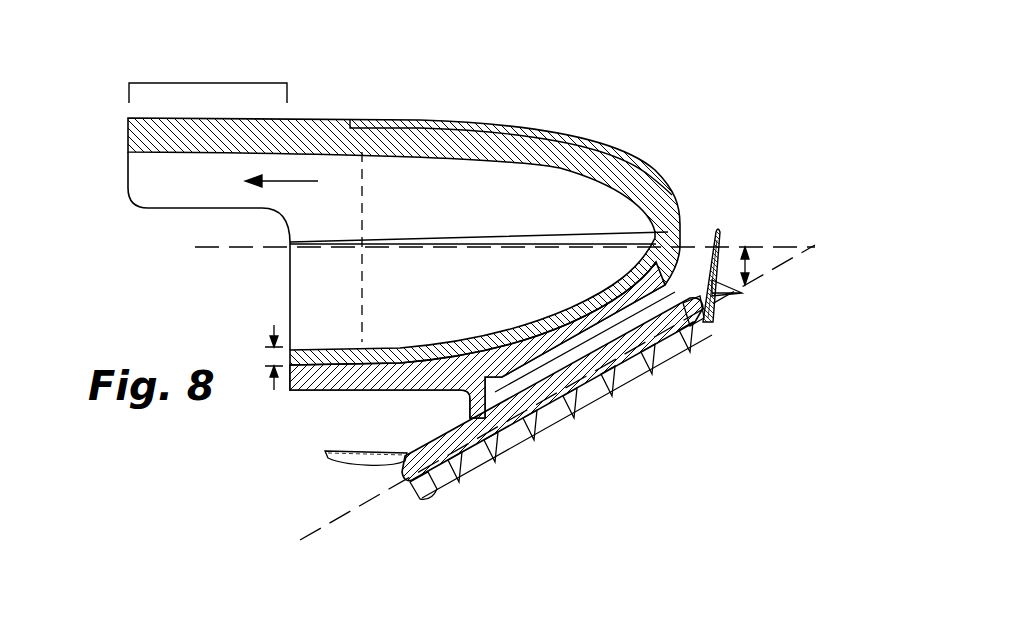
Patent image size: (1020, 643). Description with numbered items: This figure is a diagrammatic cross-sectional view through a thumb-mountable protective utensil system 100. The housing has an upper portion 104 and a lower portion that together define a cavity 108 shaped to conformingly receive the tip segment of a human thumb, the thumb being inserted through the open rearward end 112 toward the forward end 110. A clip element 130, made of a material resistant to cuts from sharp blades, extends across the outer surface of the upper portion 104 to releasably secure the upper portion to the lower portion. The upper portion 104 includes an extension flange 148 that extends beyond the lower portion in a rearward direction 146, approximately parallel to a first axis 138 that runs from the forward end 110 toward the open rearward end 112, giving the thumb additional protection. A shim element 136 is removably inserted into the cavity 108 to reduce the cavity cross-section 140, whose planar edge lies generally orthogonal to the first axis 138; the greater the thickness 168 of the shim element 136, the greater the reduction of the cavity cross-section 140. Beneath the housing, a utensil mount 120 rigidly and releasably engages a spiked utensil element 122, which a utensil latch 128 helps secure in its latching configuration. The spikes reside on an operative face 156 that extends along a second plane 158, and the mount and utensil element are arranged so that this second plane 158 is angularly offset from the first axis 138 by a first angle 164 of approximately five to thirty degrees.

The thumb-mountable protective utensil system 100 is at (622, 68).
The upper portion 104 is at (318, 118).
The cavity 108 is at (463, 214).
The forward end 110 is at (695, 198).
The open rearward end 112 is at (140, 250).
The utensil mount 120 is at (404, 465).
The spiked utensil element 122 is at (637, 400).
The utensil latch 128 is at (358, 450).
The clip element 130 is at (500, 122).
The shim element 136 is at (500, 335).
The first axis 138 is at (249, 252).
The cavity cross-section 140 is at (362, 275).
The rearward direction 146 is at (292, 181).
The extension flange 148 is at (205, 83).
The operative face 156 is at (548, 412).
The second plane 158 is at (345, 520).
The first angle 164 is at (748, 268).
The thickness 168 is at (270, 355).